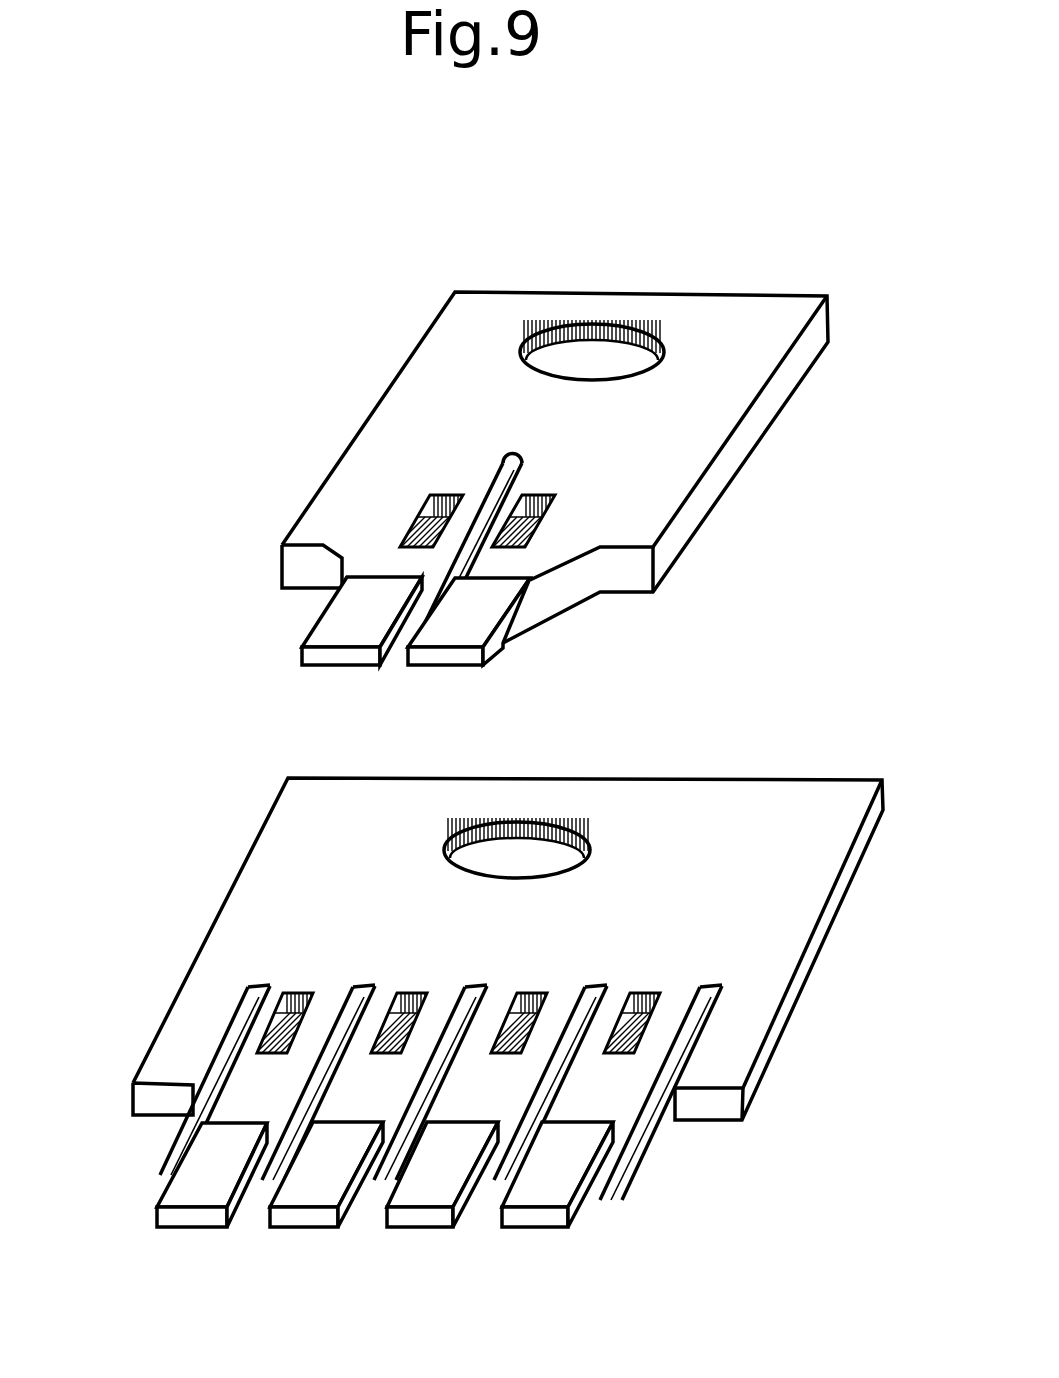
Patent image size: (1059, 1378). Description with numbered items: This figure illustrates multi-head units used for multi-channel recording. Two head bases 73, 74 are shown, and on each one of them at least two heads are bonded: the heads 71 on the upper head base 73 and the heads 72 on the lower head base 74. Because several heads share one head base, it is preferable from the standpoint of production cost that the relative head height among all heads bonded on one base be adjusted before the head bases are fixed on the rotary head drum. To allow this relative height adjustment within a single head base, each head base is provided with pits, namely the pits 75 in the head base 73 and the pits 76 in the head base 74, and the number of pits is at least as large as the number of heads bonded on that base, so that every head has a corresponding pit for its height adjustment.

The heads 71 is at (447, 617).
The heads 72 is at (508, 1223).
The head base 73 is at (722, 357).
The head base 74 is at (800, 822).
The pits 75 is at (510, 503).
The pits 76 is at (630, 1005).